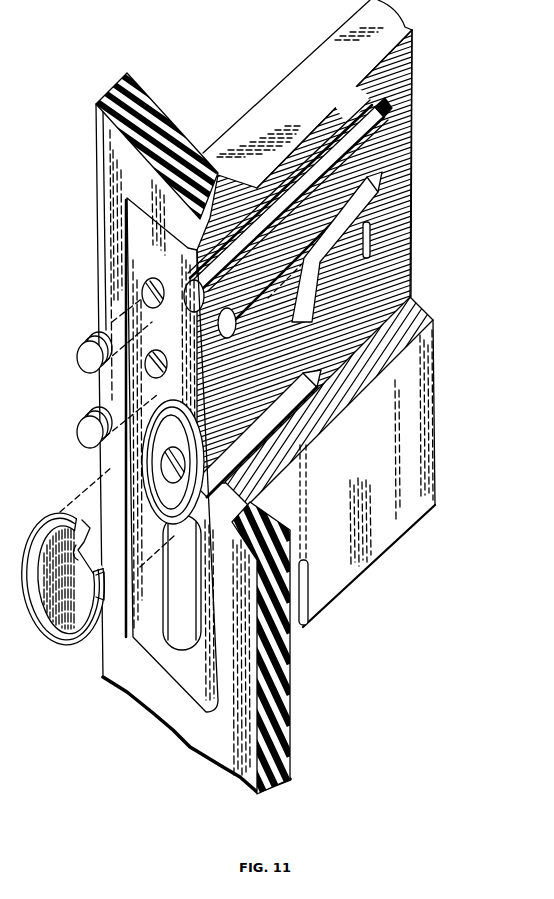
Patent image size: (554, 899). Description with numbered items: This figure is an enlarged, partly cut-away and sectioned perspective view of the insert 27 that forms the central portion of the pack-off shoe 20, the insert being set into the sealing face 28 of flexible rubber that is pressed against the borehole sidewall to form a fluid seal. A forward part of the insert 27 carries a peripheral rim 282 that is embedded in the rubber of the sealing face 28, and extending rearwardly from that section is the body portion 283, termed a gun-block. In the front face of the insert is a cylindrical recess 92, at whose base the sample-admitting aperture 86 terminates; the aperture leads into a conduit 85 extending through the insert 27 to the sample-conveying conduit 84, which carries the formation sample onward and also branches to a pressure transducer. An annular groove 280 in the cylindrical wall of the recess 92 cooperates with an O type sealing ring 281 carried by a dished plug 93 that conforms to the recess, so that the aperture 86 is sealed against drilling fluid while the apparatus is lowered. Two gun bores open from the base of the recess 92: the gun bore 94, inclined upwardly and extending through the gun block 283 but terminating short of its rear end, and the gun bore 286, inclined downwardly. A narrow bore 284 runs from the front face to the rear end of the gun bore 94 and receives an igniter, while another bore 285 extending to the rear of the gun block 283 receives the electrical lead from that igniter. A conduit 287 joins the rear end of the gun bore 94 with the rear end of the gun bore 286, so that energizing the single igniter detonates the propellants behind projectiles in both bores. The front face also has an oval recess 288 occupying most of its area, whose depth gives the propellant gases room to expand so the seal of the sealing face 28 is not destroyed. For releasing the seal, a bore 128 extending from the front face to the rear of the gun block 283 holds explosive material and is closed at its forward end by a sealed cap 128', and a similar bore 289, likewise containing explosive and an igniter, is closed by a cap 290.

The pack-off shoe 20 is at (97, 215).
The sealing face 28 is at (125, 165).
The bore 128 is at (89, 221).
The bore 289 is at (154, 280).
The cap 290 is at (88, 344).
The insert 27 is at (78, 418).
The sealed cap 128' is at (82, 438).
The cylindrical recess 92 is at (166, 458).
The gun bore 286 is at (168, 472).
The plug 93 is at (82, 545).
The annular groove 280 is at (185, 527).
The O type sealing ring 281 is at (106, 612).
The recess 288 is at (164, 647).
The bore 285 is at (355, 115).
The body portion 283 is at (287, 113).
The narrow bore 284 is at (300, 251).
The conduit 287 is at (371, 229).
The gun bore 94 is at (310, 307).
The sample-admitting aperture 86 is at (252, 495).
The peripheral rim 282 is at (258, 501).
The conduit 85 is at (306, 547).
The sample-conveying conduit 84 is at (306, 597).